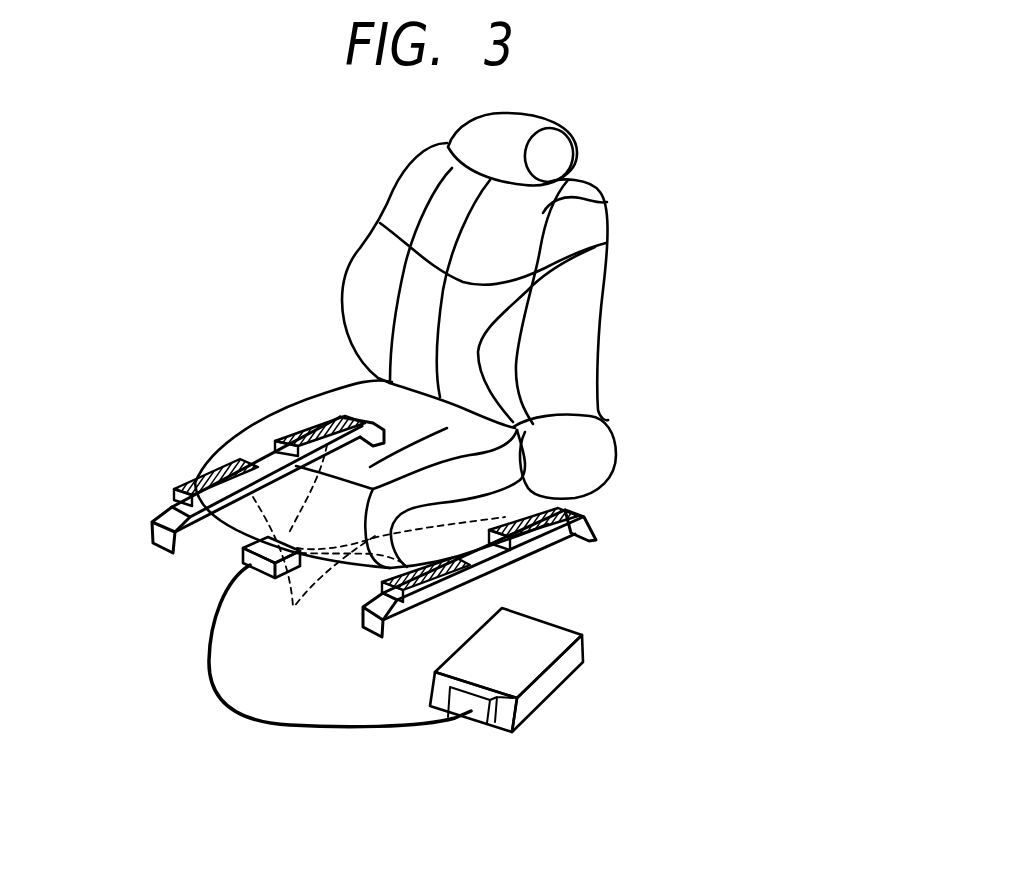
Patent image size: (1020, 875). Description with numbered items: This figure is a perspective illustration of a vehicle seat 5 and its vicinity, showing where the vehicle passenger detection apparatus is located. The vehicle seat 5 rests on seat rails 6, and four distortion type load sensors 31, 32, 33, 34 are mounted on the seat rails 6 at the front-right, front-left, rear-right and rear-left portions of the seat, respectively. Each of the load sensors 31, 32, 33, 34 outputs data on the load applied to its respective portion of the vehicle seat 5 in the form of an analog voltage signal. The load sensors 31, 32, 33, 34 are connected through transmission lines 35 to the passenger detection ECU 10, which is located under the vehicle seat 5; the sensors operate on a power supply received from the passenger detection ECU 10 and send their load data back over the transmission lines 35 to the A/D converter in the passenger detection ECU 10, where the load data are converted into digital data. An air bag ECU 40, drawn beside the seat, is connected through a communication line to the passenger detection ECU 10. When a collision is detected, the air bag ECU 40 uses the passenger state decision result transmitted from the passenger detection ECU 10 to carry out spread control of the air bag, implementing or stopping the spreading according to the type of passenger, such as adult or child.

The vehicle seat 5 is at (592, 242).
The seat rails 6 is at (174, 516).
The passenger detection ECU 10 is at (257, 542).
The distortion type load sensor 31 is at (208, 476).
The distortion type load sensor 32 is at (316, 436).
The distortion type load sensor 33 is at (473, 563).
The distortion type load sensor 34 is at (538, 505).
The transmission lines 35 is at (379, 543).
The air bag ECU 40 is at (523, 630).